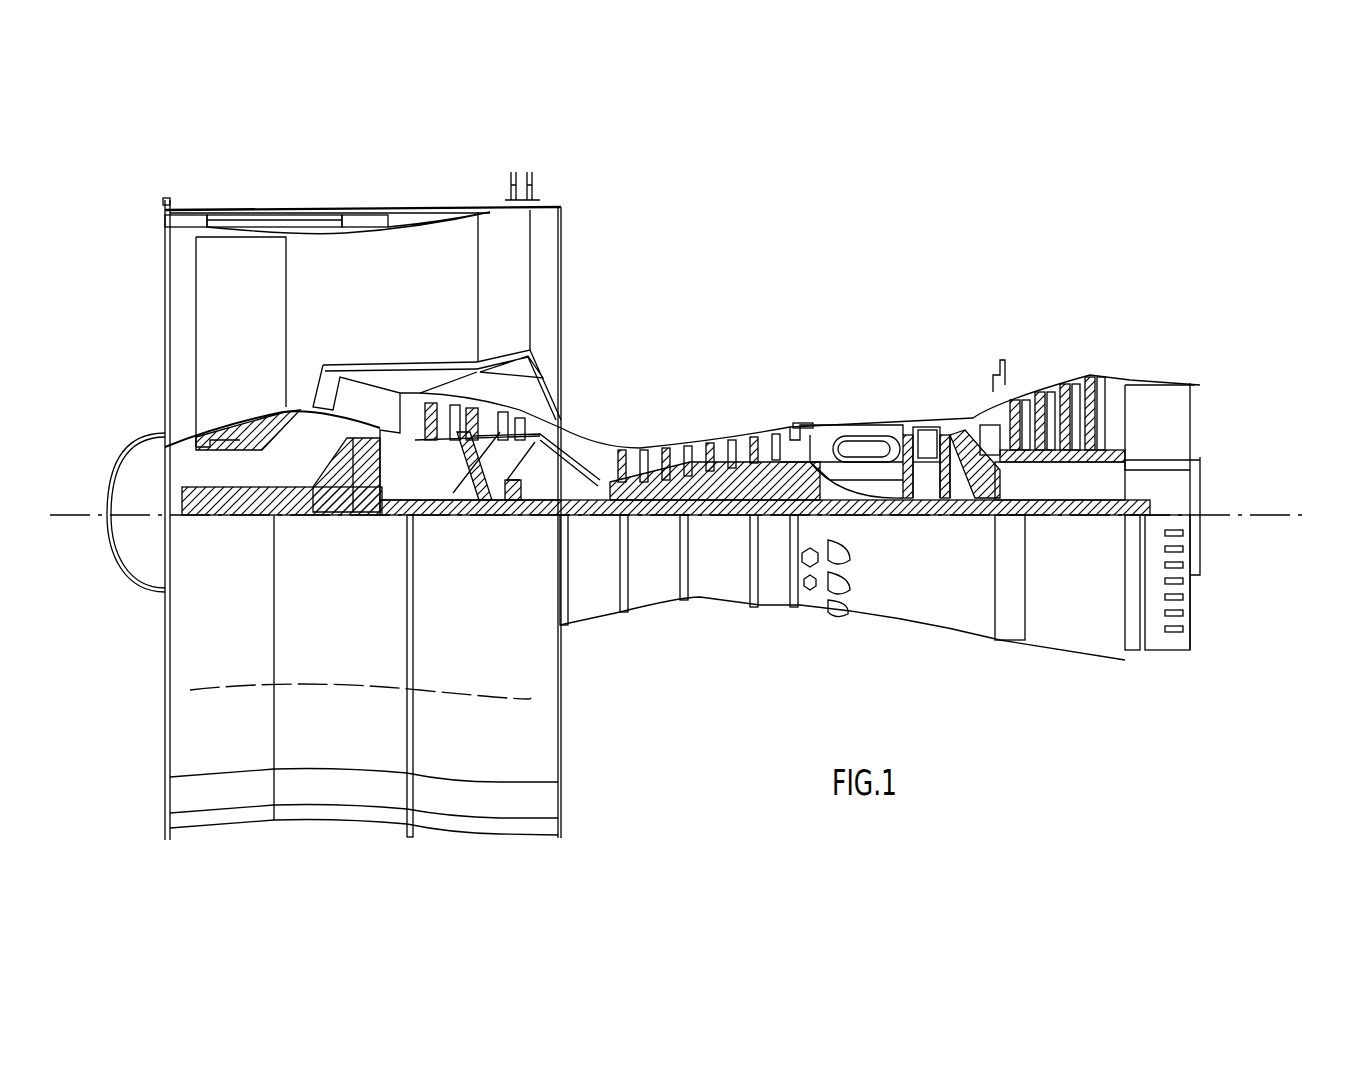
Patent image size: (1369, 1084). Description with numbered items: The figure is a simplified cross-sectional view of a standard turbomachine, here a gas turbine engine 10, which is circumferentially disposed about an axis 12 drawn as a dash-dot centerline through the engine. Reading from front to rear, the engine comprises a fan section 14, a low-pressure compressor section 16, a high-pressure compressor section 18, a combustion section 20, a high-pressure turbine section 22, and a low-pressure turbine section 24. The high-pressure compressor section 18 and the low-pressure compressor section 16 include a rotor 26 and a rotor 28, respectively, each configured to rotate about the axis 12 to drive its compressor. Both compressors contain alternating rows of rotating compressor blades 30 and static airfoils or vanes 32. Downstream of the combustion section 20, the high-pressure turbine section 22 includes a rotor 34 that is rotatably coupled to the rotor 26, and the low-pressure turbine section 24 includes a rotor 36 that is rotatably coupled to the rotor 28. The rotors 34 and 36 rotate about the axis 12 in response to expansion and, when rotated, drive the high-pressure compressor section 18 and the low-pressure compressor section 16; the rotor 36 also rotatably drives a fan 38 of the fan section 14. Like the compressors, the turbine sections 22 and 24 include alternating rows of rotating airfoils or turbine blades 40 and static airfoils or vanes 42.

The gas turbine engine 10 is at (1048, 204).
The axis 12 is at (696, 491).
The fan section 14 is at (286, 196).
The low-pressure compressor section 16 is at (574, 379).
The high-pressure compressor section 18 is at (726, 410).
The combustion section 20 is at (892, 400).
The high-pressure turbine section 22 is at (949, 395).
The low-pressure turbine section 24 is at (1094, 366).
The rotor 26 is at (737, 485).
The rotor 28 is at (448, 440).
The compressor blades 30 is at (666, 448).
The vanes 32 is at (646, 450).
The rotor 34 is at (935, 480).
The rotor 36 is at (1083, 460).
The fan 38 is at (253, 348).
The turbine blades 40 is at (955, 440).
The vanes 42 is at (928, 440).